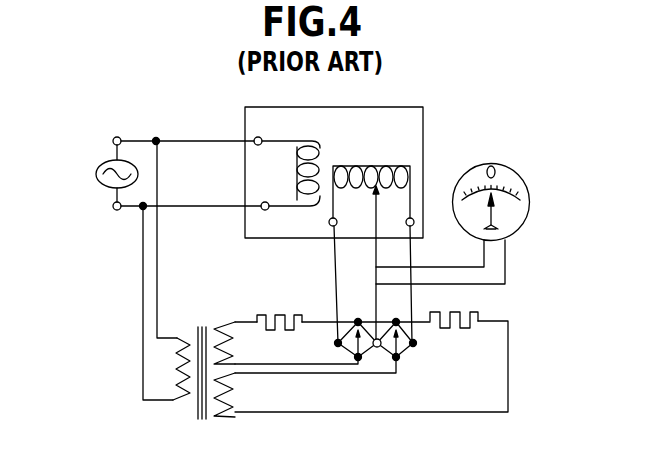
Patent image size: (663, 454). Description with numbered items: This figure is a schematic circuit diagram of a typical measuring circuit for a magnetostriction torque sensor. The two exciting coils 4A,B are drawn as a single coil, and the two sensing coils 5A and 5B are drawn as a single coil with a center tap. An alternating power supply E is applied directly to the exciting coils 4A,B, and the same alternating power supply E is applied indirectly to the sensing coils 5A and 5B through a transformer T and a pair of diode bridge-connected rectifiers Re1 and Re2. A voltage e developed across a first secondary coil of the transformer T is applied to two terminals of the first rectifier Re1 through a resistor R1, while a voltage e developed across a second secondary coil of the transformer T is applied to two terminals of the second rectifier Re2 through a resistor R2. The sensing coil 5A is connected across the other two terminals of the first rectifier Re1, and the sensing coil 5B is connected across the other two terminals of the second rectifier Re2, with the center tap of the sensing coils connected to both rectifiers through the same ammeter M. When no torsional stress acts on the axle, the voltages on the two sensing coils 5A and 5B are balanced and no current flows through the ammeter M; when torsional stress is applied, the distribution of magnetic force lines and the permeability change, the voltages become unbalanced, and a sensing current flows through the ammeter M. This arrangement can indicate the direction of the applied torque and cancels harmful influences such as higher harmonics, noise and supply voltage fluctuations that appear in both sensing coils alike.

The alternating power supply E is at (97, 172).
The exciting coils 4A,B is at (300, 170).
The sensing coil 5A is at (353, 182).
The sensing coil 5B is at (393, 182).
The ammeter M is at (517, 238).
The transformer T is at (203, 325).
The voltage developed across secondary coil e is at (232, 369).
The resistor R1 is at (279, 309).
The resistor R2 is at (454, 307).
The first rectifier Re1 is at (356, 326).
The second rectifier Re2 is at (395, 326).